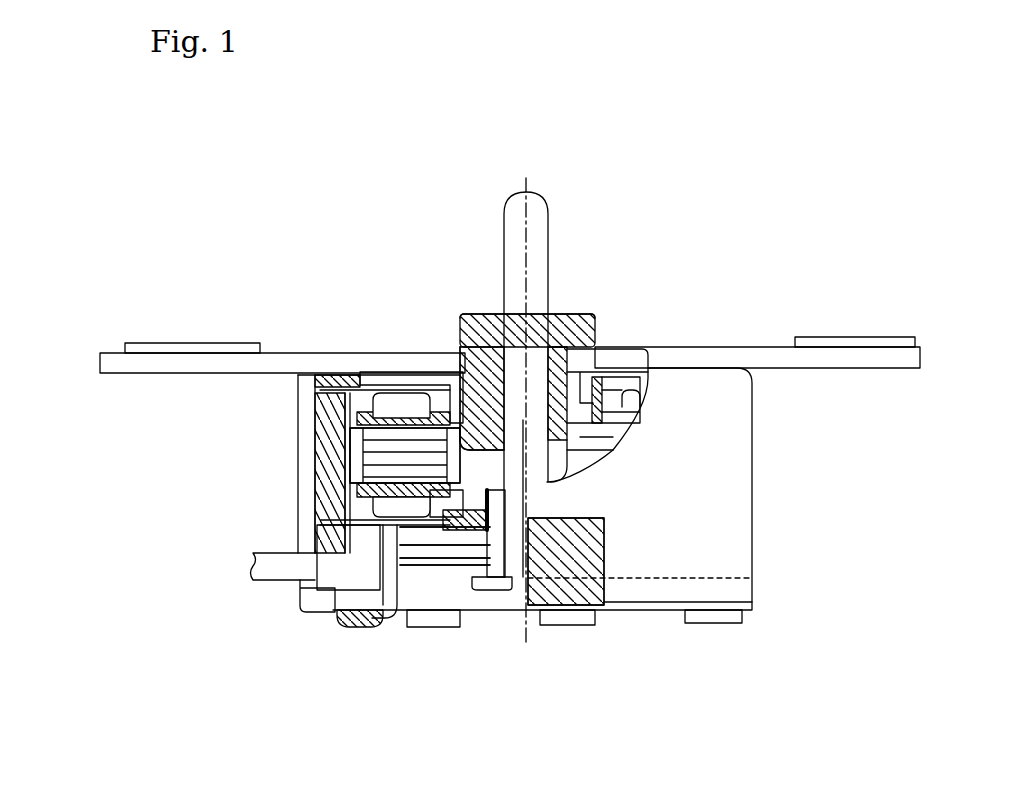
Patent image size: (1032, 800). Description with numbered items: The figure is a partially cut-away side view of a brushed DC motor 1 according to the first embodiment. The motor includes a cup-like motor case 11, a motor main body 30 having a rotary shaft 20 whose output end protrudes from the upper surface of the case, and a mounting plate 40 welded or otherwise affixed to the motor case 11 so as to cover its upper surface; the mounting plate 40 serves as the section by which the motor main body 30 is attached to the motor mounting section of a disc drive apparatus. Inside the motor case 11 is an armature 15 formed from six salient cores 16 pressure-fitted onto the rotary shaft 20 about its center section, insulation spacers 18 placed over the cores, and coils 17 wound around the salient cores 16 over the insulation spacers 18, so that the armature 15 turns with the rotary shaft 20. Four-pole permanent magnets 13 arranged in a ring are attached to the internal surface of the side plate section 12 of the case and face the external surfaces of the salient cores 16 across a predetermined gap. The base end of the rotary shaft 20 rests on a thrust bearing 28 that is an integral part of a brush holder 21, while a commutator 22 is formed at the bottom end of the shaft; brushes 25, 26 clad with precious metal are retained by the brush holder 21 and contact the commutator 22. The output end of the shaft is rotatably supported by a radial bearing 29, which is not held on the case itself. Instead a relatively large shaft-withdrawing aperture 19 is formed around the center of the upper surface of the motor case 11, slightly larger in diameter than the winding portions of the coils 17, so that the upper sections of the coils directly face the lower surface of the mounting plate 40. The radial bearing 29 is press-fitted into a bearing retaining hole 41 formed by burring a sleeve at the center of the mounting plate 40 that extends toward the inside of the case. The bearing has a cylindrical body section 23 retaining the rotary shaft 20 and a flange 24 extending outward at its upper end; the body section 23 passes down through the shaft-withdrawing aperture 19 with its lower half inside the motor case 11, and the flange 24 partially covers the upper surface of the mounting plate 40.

The motor 1 is at (312, 210).
The motor case 11 is at (300, 375).
The side plate section 12 is at (298, 443).
The permanent magnets 13 is at (322, 468).
The armature 15 is at (182, 508).
The salient cores 16 is at (398, 495).
The coils 17 is at (400, 528).
The insulation spacers 18 is at (640, 408).
The shaft-withdrawing aperture 19 is at (375, 372).
The rotary shaft 20 is at (505, 205).
The brush holder 21 is at (428, 598).
The commutator 22 is at (520, 594).
The body section 23 is at (478, 346).
The flange 24 is at (470, 316).
The brush 25 is at (385, 597).
The brush 26 is at (385, 597).
The thrust bearing 28 is at (473, 568).
The radial bearing 29 is at (396, 235).
The motor main body 30 is at (845, 428).
The mounting plate 40 is at (155, 363).
The bearing retaining hole 41 is at (463, 348).